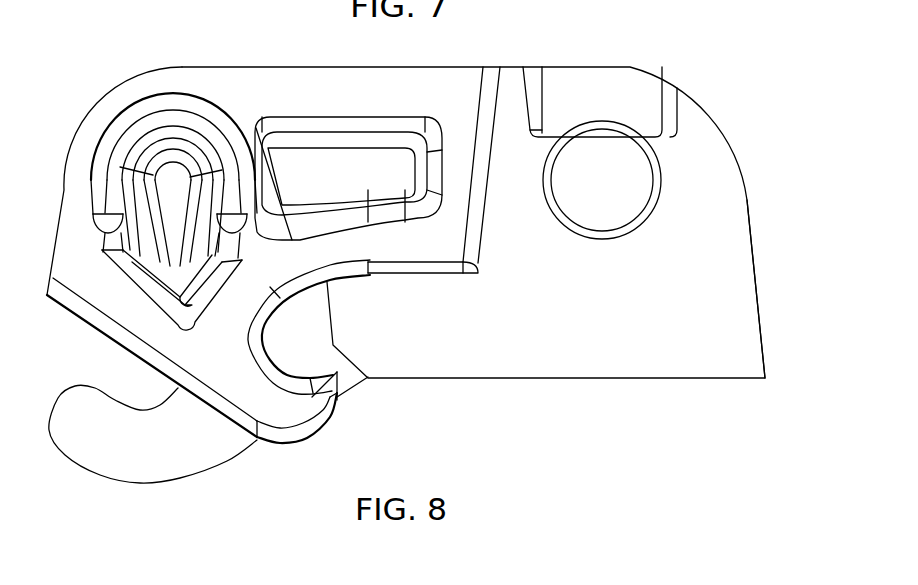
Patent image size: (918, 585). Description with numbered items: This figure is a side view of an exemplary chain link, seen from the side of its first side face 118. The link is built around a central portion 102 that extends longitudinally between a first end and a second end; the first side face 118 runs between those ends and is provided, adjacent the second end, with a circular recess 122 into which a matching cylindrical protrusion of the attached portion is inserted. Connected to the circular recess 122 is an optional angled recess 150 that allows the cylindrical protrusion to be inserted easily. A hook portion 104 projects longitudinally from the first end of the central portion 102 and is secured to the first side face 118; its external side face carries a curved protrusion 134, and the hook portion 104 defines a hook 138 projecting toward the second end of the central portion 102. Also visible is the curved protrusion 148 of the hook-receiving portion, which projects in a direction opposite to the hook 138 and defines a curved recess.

The central portion 102 is at (679, 208).
The hook portion 104 is at (327, 83).
The first side face 118 is at (709, 280).
The circular recess 122 is at (624, 183).
The curved protrusion 134 is at (120, 117).
The hook 138 is at (293, 413).
The curved protrusion 148 is at (122, 448).
The angled recess 150 is at (605, 78).